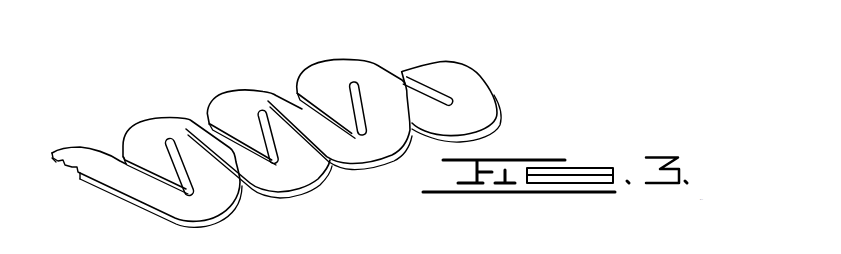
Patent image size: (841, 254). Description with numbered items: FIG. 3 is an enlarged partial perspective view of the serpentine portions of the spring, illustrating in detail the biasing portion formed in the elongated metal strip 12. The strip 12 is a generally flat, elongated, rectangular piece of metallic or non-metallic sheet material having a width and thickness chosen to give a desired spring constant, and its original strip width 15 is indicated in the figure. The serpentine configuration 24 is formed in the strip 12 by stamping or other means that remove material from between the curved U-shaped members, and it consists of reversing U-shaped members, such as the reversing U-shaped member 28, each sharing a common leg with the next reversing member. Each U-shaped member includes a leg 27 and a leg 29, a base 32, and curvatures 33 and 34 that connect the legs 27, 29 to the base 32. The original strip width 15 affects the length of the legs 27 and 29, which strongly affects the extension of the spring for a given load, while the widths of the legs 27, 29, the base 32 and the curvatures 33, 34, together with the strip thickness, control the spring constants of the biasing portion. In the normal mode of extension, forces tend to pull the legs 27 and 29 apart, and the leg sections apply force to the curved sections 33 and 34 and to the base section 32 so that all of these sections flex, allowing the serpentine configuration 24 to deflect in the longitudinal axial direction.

The elongated metal strip 12 is at (202, 180).
The original strip width 15 is at (357, 52).
The serpentine configuration 24 is at (335, 62).
The leg 27 is at (192, 120).
The reversing U-shaped member 28 is at (240, 90).
The leg 29 is at (265, 138).
The base 32 is at (308, 185).
The curvature 33 is at (271, 185).
The curvature 34 is at (320, 163).